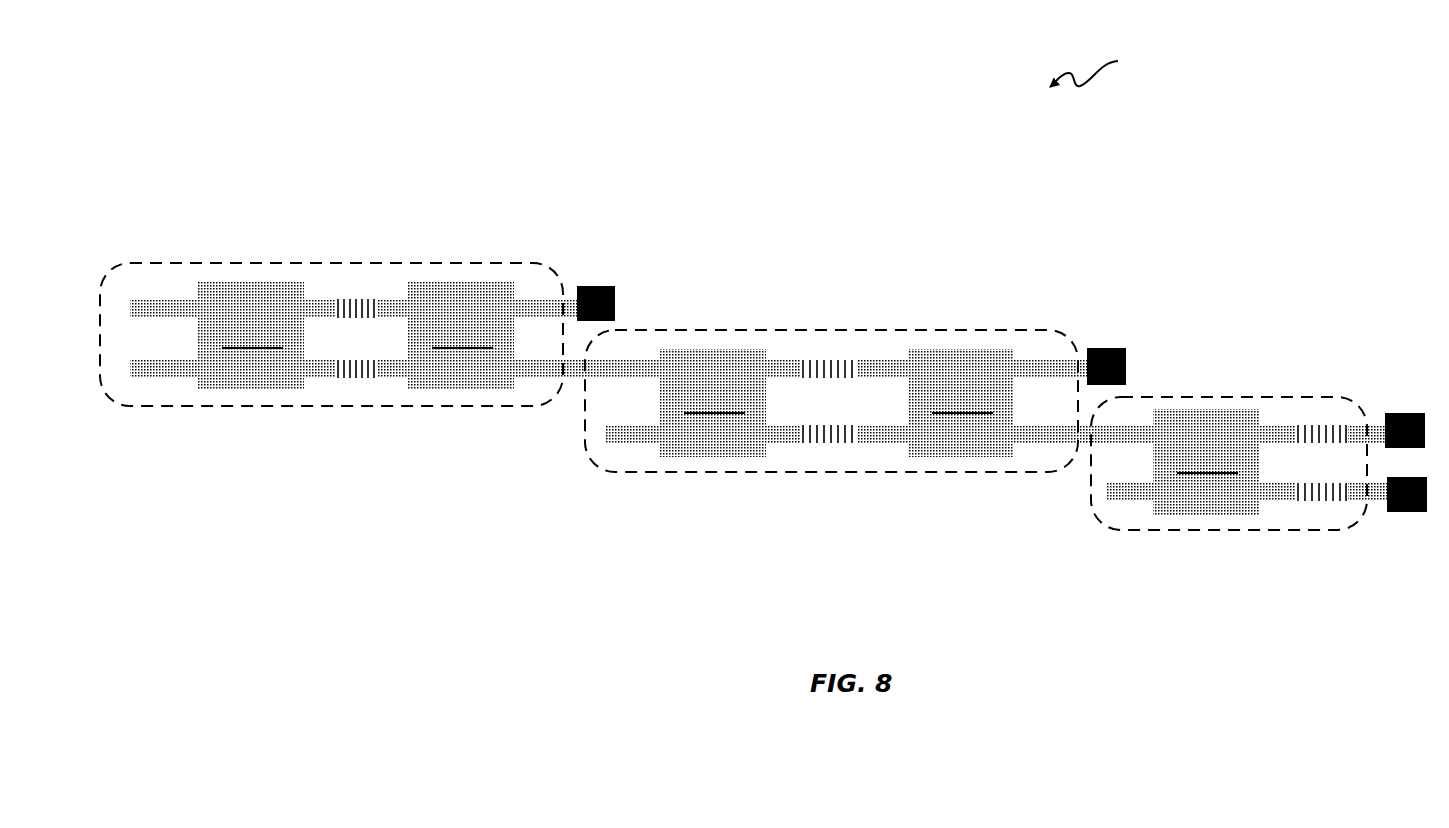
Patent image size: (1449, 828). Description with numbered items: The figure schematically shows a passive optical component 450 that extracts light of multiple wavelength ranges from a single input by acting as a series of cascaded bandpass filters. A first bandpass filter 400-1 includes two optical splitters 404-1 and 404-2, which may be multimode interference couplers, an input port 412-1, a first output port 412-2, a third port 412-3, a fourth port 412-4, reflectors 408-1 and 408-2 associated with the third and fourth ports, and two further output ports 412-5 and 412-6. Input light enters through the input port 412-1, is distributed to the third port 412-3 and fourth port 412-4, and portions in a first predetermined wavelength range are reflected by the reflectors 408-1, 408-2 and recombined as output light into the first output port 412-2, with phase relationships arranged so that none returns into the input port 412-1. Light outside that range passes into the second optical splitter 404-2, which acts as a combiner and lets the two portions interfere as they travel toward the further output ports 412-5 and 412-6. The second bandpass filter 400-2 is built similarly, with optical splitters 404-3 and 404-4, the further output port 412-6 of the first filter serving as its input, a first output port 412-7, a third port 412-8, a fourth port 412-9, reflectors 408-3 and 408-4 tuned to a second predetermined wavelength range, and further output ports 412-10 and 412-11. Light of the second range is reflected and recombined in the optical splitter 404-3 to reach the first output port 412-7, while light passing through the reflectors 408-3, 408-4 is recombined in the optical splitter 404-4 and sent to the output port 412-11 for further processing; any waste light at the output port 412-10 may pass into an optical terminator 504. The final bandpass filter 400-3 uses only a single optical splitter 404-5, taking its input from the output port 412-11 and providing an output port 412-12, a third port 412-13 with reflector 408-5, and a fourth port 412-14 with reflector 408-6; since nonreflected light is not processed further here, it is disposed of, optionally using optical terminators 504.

The passive optical component 450 is at (1109, 67).
The first bandpass filter 400-1 is at (223, 263).
The second bandpass filter 400-2 is at (702, 330).
The third bandpass filter 400-3 is at (1187, 397).
The optical splitter 404-1 is at (251, 336).
The second optical splitter 404-2 is at (461, 336).
The optical splitter 404-3 is at (713, 403).
The optical splitter 404-4 is at (961, 403).
The optical splitter 404-5 is at (1206, 462).
The reflector 408-1 is at (363, 300).
The reflector 408-2 is at (360, 380).
The reflector 408-3 is at (840, 360).
The reflector 408-4 is at (840, 445).
The reflector 408-5 is at (1327, 423).
The reflector 408-6 is at (1325, 501).
The input port 412-1 is at (167, 310).
The first output port 412-2 is at (163, 380).
The third port 412-3 is at (317, 303).
The fourth port 412-4 is at (322, 380).
The further output port 412-5 is at (530, 300).
The further output port 412-6 is at (553, 380).
The first output port 412-7 is at (635, 445).
The third port 412-8 is at (783, 362).
The fourth port 412-9 is at (785, 445).
The further output port 412-10 is at (1035, 362).
The output port 412-11 is at (1040, 445).
The output port 412-12 is at (1133, 501).
The third port 412-13 is at (1280, 425).
The fourth port 412-14 is at (1277, 501).
The optical terminator 504 is at (608, 286).